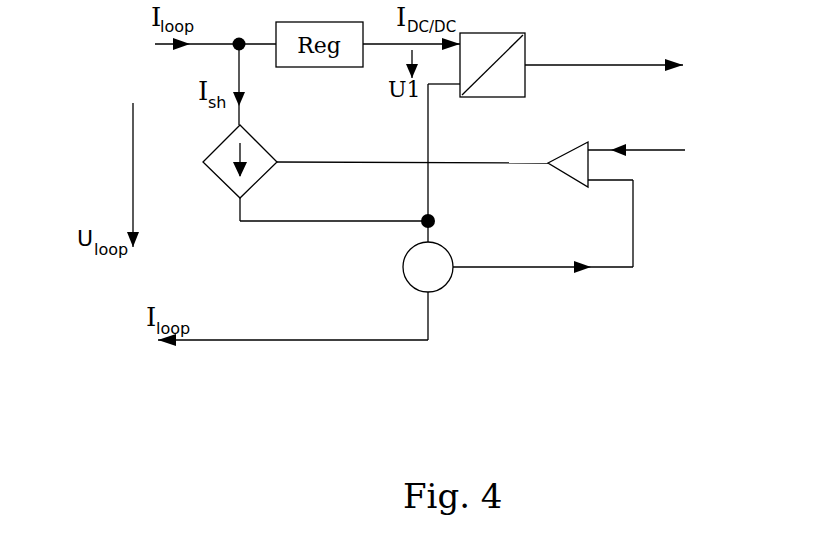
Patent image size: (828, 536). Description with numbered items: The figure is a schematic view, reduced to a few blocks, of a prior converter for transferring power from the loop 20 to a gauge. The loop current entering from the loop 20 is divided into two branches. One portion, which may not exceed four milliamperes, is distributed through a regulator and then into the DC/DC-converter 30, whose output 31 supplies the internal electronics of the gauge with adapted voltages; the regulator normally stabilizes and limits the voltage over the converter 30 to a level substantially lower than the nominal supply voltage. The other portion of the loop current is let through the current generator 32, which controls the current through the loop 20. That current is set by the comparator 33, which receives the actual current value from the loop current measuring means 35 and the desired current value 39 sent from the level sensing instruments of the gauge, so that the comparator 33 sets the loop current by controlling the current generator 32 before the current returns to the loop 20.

The loop 20 is at (261, 192).
The DC/DC-converter 30 is at (492, 65).
The output 31 is at (604, 56).
The current generator 32 is at (313, 173).
The comparator 33 is at (455, 207).
The loop current measuring means 35 is at (428, 267).
The desired current value 39 is at (653, 150).